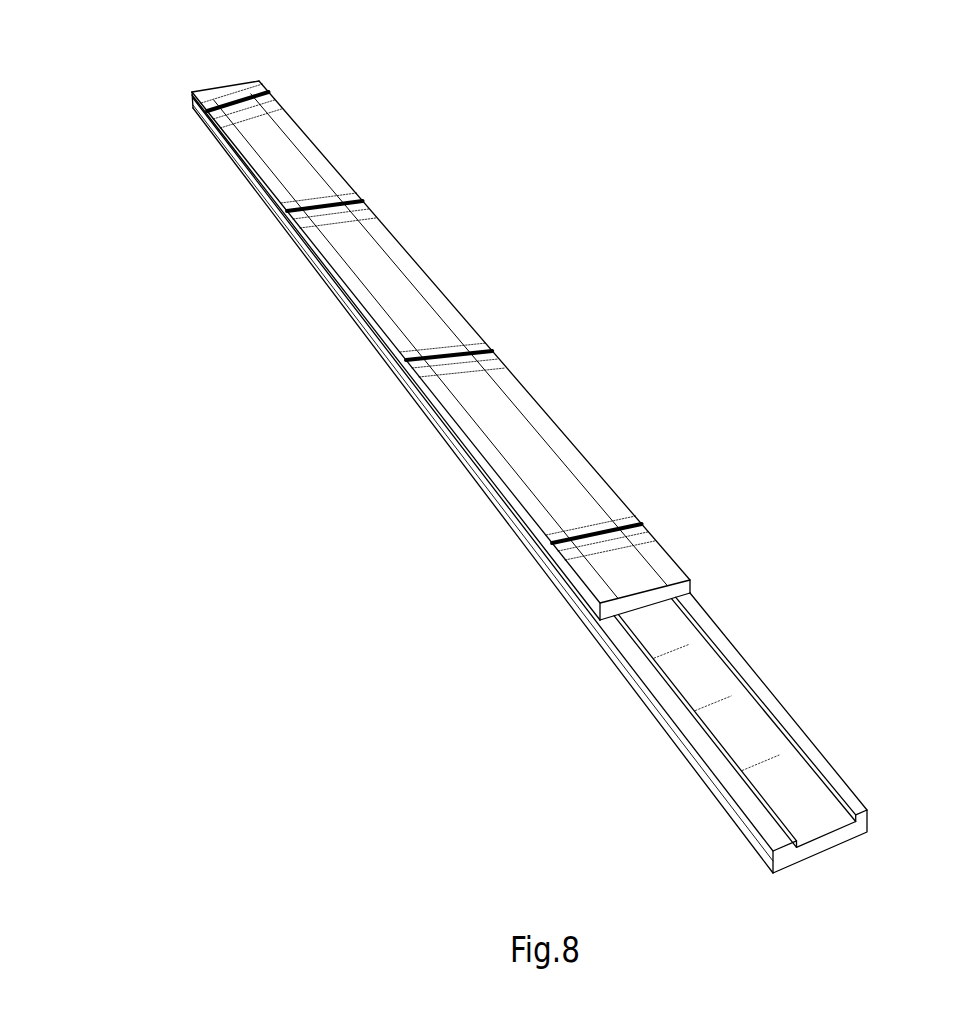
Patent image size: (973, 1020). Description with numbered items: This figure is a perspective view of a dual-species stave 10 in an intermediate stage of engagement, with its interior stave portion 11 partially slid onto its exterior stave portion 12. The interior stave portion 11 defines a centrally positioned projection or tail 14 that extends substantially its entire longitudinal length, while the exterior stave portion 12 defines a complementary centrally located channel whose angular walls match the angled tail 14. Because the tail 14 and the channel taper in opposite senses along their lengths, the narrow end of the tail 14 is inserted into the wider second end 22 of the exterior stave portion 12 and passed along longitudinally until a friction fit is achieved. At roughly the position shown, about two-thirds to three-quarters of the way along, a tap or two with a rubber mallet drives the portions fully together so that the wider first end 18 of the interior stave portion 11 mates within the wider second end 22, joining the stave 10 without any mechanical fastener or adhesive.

The dual-species stave 10 is at (119, 138).
The interior stave portion 11 is at (688, 760).
The exterior stave portion 12 is at (302, 148).
The tail 14 is at (750, 714).
The first end 18 is at (868, 833).
The second end 22 is at (681, 595).